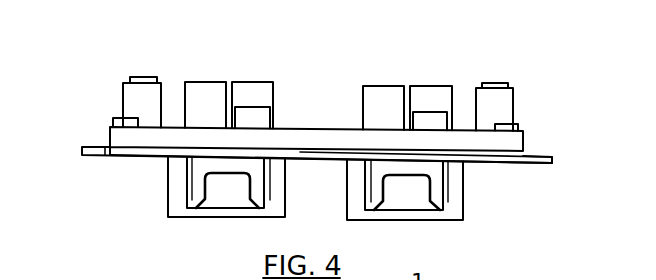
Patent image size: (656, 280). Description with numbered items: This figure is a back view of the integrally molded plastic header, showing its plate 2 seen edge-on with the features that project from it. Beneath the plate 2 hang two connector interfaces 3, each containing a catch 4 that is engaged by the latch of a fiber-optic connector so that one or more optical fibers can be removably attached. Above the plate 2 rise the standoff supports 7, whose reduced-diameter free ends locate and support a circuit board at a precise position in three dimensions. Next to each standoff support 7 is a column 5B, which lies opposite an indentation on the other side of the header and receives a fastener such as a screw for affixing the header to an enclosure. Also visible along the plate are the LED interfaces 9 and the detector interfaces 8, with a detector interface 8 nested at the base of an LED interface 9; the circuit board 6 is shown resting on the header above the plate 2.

The plate 2 is at (555, 162).
The connector interface 3 is at (278, 212).
The catch 4 is at (258, 180).
The column 5B is at (115, 119).
The circuit board 6 is at (523, 142).
The standoff support 7 is at (127, 77).
The detector interface 8 is at (267, 104).
The LED interface 9 is at (202, 80).